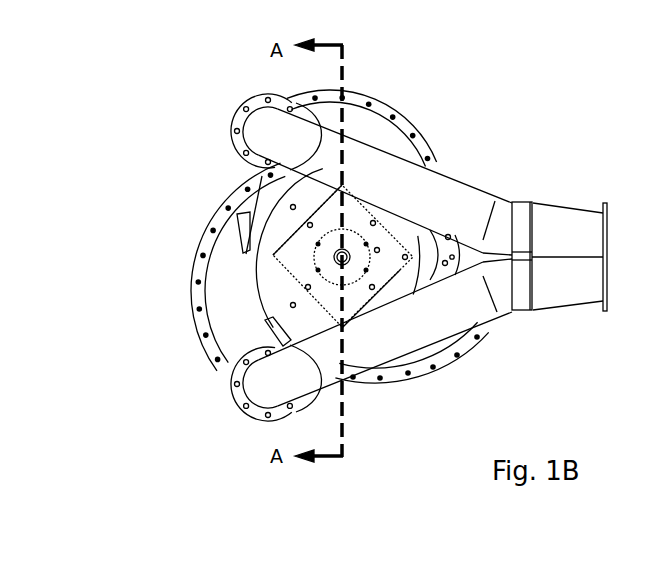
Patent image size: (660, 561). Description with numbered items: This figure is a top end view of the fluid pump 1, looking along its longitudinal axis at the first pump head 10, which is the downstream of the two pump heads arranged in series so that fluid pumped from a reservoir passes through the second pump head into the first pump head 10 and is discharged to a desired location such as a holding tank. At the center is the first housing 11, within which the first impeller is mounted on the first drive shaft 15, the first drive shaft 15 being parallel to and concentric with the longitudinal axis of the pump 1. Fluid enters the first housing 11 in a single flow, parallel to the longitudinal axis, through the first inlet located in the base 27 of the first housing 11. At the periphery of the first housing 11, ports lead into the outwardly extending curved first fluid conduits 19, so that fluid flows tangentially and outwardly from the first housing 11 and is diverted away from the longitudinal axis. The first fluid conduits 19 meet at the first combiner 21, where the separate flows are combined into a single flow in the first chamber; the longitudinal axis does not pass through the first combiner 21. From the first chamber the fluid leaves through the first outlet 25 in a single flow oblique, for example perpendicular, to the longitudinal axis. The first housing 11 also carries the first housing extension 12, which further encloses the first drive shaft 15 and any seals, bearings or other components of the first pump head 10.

The fluid pump 1 is at (475, 88).
The first pump head 10 is at (470, 376).
The first housing 11 is at (258, 205).
The first housing extension 12 is at (295, 246).
The first drive shaft 15 is at (334, 257).
The first fluid conduits 19 is at (447, 197).
The first combiner 21 is at (557, 220).
The first outlet 25 is at (616, 257).
The base 27 is at (363, 123).